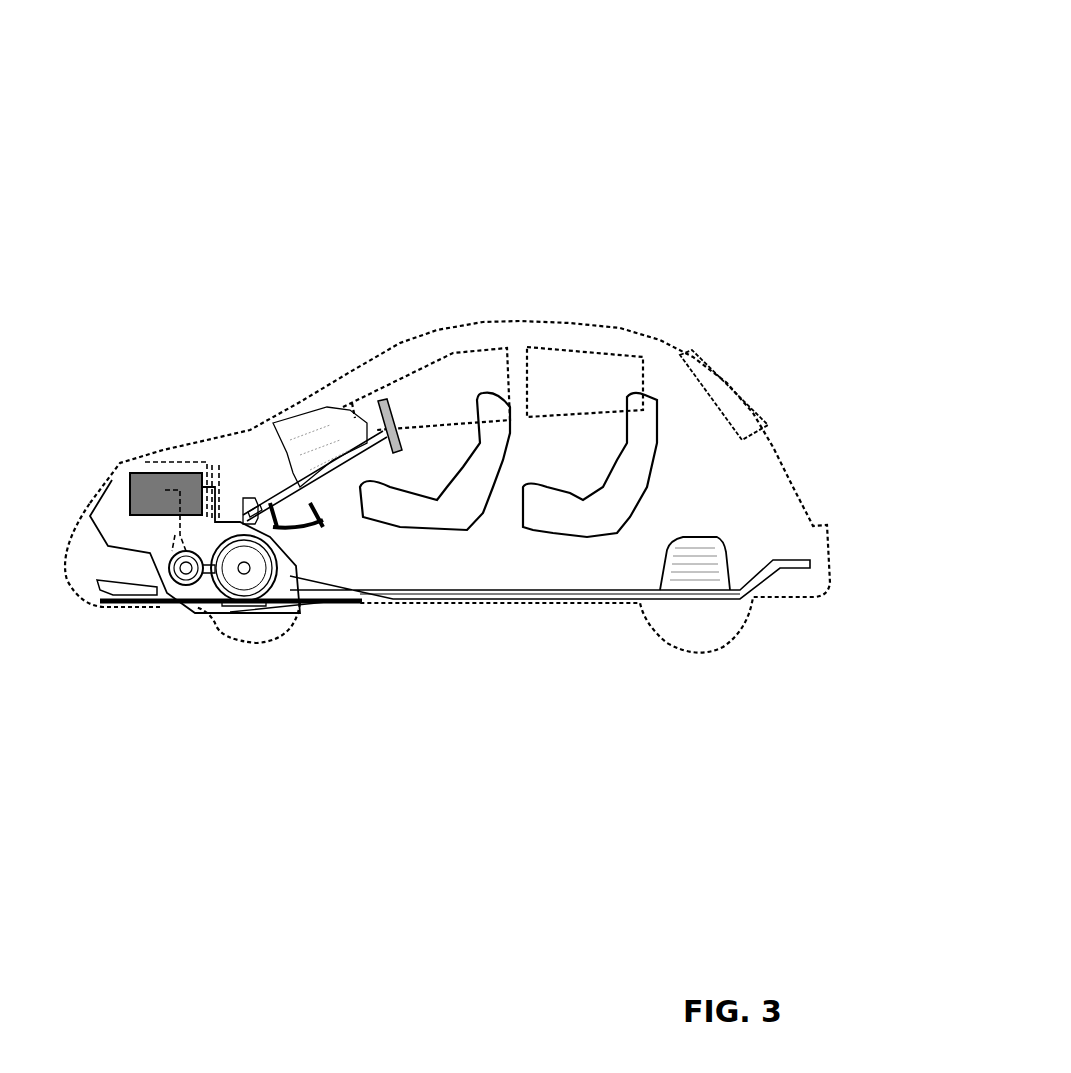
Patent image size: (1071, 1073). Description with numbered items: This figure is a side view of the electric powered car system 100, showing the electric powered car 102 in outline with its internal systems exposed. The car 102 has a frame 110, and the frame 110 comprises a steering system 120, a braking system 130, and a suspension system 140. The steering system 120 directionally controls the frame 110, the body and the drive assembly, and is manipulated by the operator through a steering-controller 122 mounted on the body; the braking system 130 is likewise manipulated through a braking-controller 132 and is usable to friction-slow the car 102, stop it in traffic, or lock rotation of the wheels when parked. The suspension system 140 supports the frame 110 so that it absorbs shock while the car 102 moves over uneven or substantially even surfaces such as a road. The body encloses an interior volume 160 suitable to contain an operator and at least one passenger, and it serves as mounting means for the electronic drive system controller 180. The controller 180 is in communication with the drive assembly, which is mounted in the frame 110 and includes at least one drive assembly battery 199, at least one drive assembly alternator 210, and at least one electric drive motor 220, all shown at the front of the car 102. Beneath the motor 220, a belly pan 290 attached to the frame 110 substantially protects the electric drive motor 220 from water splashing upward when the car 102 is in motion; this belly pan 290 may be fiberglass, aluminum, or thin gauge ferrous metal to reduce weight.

The electric powered car system 100 is at (658, 76).
The electric powered car 102 is at (686, 123).
The frame 110 is at (793, 557).
The steering system 120 is at (268, 472).
The steering-controller 122 is at (403, 450).
The braking system 130 is at (238, 502).
The braking-controller 132 is at (327, 513).
The suspension system 140 is at (713, 537).
The interior volume 160 is at (448, 398).
The electronic drive system controller 180 is at (370, 423).
The drive assembly battery 199 is at (137, 470).
The drive assembly alternator 210 is at (167, 587).
The electric drive motor 220 is at (280, 578).
The belly pan 290 is at (257, 620).